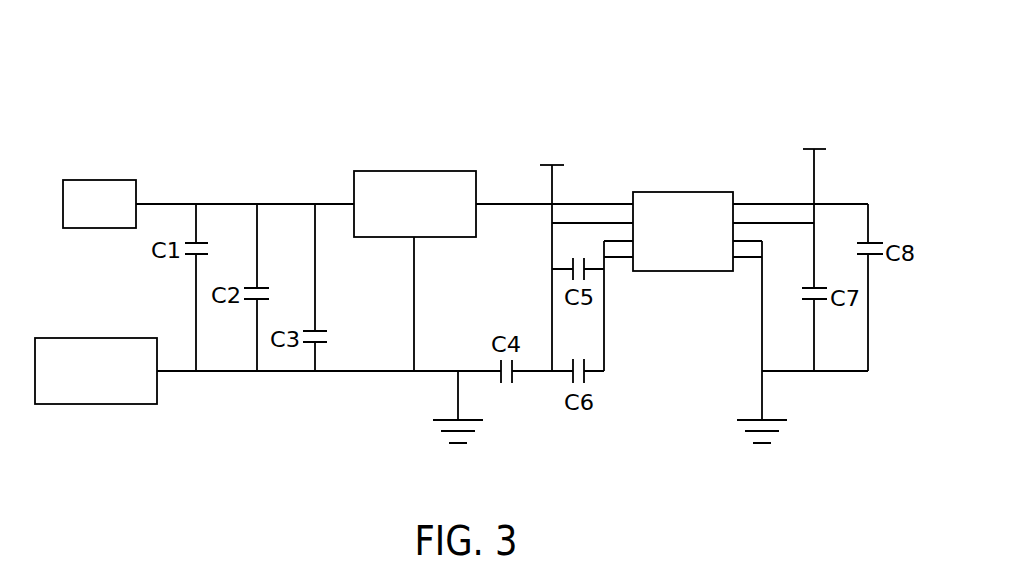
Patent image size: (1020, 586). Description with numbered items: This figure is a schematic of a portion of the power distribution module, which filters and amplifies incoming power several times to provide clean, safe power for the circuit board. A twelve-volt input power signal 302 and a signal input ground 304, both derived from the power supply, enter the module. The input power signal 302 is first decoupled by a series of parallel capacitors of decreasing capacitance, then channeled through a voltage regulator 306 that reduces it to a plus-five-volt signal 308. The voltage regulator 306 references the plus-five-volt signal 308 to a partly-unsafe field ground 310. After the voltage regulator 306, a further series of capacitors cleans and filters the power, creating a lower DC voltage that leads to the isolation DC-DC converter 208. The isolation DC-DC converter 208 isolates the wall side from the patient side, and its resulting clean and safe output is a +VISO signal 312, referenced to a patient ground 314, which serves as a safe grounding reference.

The 12V input power signal 302 is at (97, 179).
The signal input ground 304 is at (94, 405).
The voltage regulator 306 is at (410, 170).
The +5V signal 308 is at (557, 123).
The field ground 310 is at (457, 403).
The +VISO signal 312 is at (815, 108).
The patient ground 314 is at (762, 389).
The isolation DC-DC converter 208 is at (677, 190).